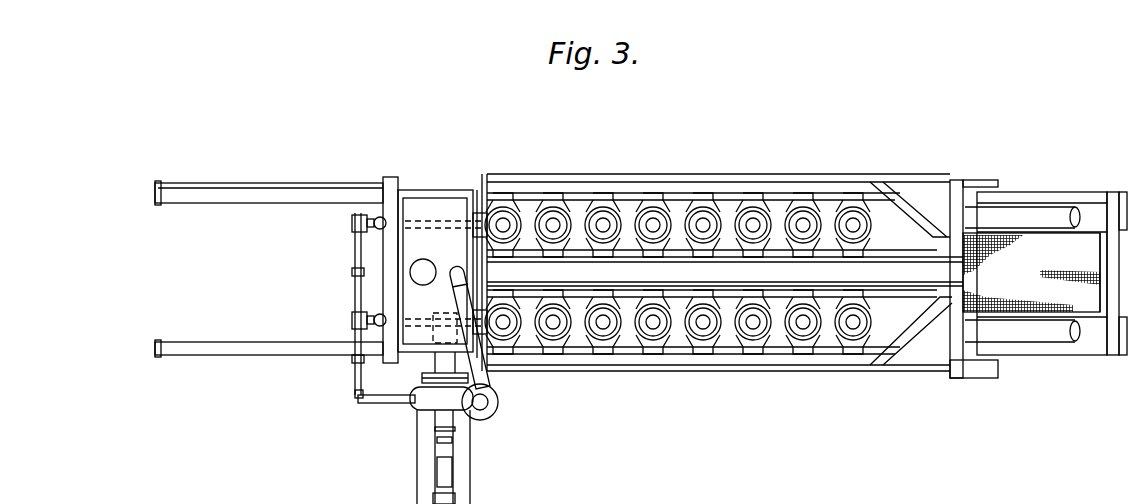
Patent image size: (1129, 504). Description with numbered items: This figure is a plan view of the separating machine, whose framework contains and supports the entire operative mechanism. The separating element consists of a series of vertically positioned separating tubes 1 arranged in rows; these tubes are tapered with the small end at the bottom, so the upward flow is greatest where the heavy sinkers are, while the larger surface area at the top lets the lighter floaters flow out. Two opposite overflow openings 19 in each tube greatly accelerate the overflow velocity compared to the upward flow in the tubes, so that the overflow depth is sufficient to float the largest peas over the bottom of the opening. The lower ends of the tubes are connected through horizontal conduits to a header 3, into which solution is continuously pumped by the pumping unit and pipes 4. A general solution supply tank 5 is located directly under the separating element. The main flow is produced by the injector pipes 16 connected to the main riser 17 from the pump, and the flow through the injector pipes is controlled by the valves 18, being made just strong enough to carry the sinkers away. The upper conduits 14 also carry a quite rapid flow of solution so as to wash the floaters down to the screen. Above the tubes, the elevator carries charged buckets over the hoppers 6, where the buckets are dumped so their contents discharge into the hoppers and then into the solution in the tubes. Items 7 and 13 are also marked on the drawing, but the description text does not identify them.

The separating tubes 1 is at (627, 203).
The header 3 is at (437, 274).
The pumping unit and pipes 4 is at (350, 222).
The solution supply tank 5 is at (554, 410).
The hoppers 6 is at (562, 275).
The section line 7 is at (802, 415).
The end bearing block 13 is at (1092, 202).
The upper conduits 14 is at (747, 187).
The injector pipes 16 is at (428, 222).
The main riser 17 is at (497, 398).
The valves 18 is at (377, 232).
The overflow openings 19 is at (602, 197).